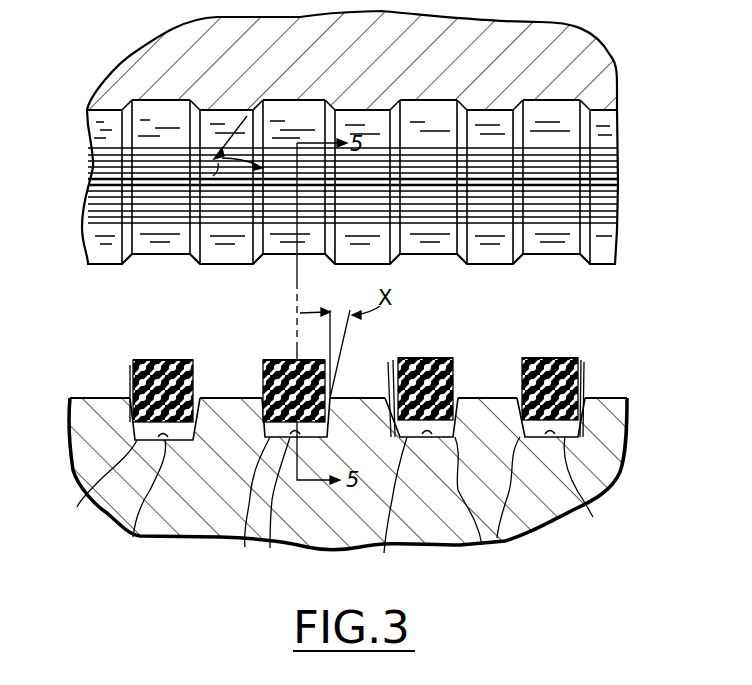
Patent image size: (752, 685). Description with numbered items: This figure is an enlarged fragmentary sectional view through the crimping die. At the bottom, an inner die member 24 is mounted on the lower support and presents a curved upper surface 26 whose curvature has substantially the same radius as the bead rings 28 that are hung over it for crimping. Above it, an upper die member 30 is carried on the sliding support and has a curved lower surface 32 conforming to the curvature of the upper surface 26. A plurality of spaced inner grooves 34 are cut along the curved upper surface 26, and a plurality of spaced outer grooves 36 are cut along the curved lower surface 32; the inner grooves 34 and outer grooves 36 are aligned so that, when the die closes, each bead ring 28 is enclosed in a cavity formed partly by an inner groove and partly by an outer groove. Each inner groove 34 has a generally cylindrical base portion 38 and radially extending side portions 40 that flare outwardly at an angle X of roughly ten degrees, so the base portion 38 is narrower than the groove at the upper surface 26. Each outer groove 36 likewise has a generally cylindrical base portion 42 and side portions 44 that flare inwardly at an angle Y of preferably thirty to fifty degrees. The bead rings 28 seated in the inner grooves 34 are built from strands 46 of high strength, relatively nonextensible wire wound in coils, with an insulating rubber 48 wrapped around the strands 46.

The inner die member 24 is at (350, 438).
The curved upper surface 26 is at (606, 413).
The bead rings 28 is at (152, 360).
The upper die member 30 is at (368, 149).
The curved lower surface 32 is at (494, 250).
The inner grooves 34 is at (85, 485).
The outer grooves 36 is at (290, 35).
The base portion 38 is at (112, 505).
The side portions 40 is at (130, 412).
The base portion 42 is at (147, 100).
The side portion 44 is at (124, 108).
The strands 46 is at (130, 392).
The rubber 48 is at (135, 360).